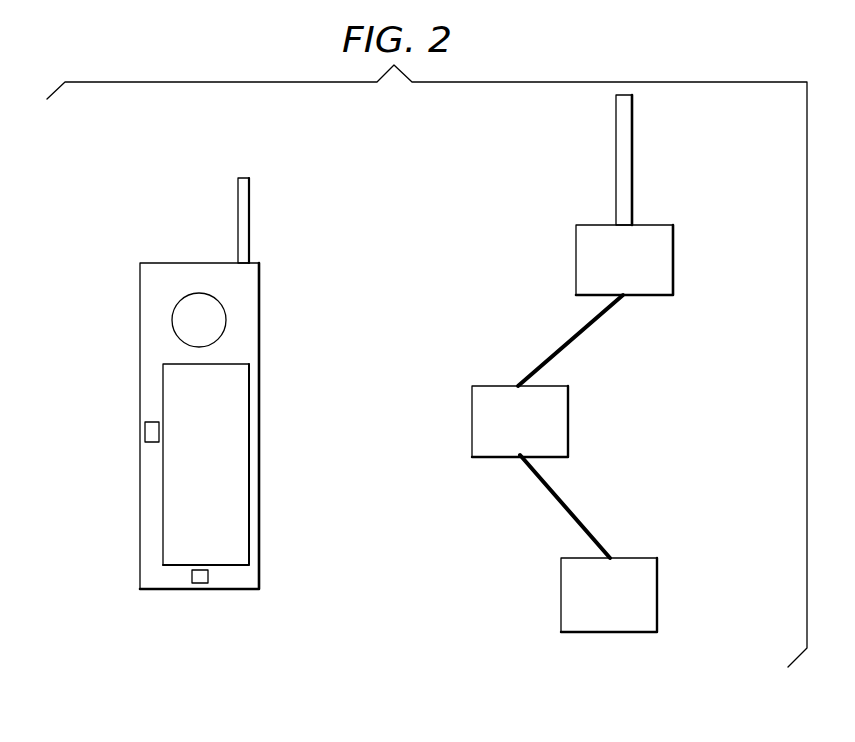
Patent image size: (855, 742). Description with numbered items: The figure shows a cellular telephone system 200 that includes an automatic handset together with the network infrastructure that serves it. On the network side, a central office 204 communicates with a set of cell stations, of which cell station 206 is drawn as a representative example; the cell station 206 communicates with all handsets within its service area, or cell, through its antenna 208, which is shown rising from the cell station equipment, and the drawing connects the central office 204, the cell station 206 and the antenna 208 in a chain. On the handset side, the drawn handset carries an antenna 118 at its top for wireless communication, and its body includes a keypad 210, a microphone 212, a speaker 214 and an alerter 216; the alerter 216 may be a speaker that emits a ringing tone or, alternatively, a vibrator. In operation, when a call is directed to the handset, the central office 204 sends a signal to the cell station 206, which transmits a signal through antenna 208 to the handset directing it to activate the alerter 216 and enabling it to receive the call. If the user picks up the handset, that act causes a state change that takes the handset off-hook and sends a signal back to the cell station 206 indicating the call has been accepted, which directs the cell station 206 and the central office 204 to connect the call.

The cellular telephone system 200 is at (302, 146).
The antenna 118 is at (249, 211).
The keypad 210 is at (250, 413).
The speaker 214 is at (172, 318).
The alerter 216 is at (145, 430).
The microphone 212 is at (203, 590).
The antenna 208 is at (616, 157).
The cell station 206 is at (495, 386).
The central office 204 is at (633, 558).